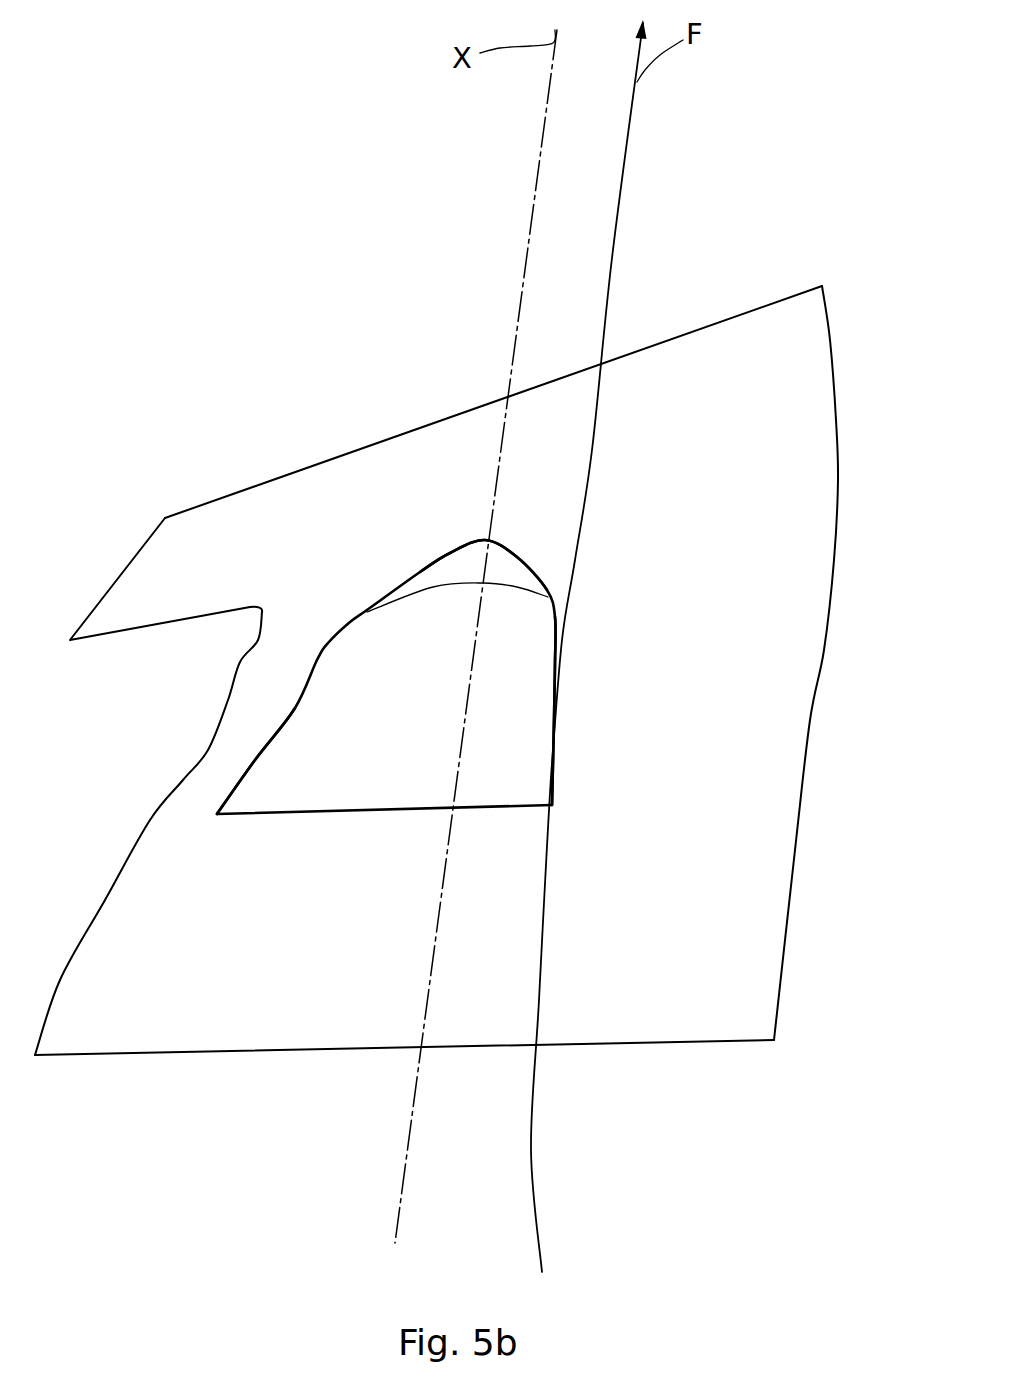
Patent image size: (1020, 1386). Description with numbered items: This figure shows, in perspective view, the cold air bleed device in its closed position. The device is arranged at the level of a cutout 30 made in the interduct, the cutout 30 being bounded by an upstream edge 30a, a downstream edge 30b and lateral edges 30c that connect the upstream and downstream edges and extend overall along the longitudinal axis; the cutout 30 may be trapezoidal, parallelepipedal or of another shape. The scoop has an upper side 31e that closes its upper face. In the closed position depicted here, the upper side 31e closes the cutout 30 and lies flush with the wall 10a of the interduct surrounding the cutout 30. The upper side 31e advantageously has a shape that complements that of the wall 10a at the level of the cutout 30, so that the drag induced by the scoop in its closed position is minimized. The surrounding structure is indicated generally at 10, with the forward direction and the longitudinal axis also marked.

The vehicle body panel 10 is at (735, 203).
The wall 10a is at (663, 960).
The cutout 30 is at (356, 596).
The upstream edge 30a is at (397, 815).
The downstream edge 30b is at (510, 548).
The lateral edges 30c is at (556, 700).
The upper side 31e is at (315, 785).